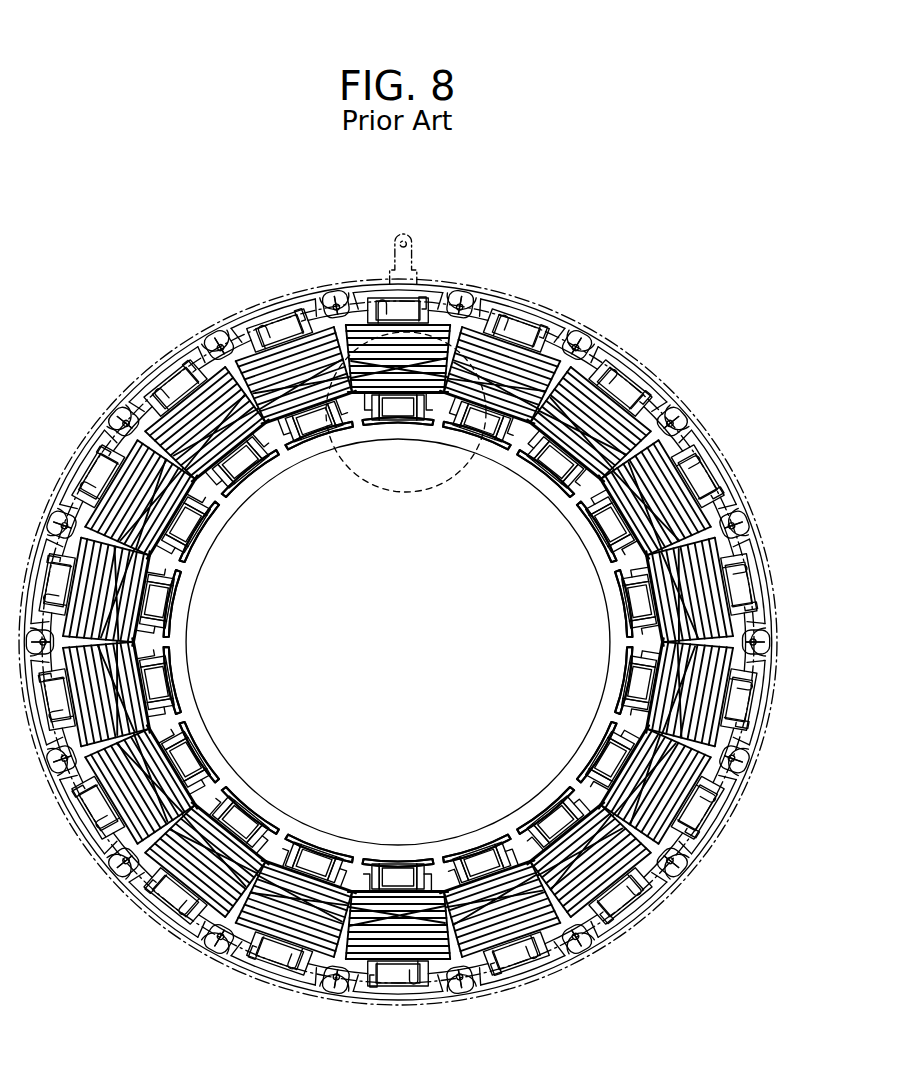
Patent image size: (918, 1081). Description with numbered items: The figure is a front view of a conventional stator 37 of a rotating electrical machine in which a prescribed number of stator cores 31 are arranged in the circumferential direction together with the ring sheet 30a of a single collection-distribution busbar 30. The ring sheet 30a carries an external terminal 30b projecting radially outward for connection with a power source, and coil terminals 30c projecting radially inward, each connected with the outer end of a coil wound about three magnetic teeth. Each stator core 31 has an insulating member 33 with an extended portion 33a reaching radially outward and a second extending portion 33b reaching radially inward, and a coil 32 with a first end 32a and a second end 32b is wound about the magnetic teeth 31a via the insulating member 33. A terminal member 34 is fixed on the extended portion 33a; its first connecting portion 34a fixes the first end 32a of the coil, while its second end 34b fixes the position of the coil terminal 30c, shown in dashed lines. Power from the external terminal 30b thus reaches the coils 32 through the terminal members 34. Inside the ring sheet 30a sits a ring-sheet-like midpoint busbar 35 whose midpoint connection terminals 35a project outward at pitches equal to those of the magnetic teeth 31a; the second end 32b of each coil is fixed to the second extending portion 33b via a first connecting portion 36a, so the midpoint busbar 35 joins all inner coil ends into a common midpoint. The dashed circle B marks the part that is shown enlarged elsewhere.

The stator 37 is at (614, 266).
The collection-distribution busbar 30 is at (440, 262).
The ring sheet 30a is at (515, 297).
The external terminal 30b is at (403, 232).
The coil terminal 30c is at (118, 424).
The stator core 31 is at (352, 292).
The magnetic teeth 31a is at (380, 424).
The coil 32 is at (352, 432).
The first end of the coil 32a is at (205, 338).
The second end of the coil 32b is at (440, 428).
The insulating member 33 is at (390, 305).
The extended portion 33a is at (442, 310).
The second extending portion 33b is at (446, 446).
The terminal member 34 is at (298, 320).
The first connecting portion 34a is at (258, 328).
The second end of the terminal member 34b is at (326, 300).
The midpoint busbar 35 is at (640, 622).
The midpoint connection terminal 35a is at (332, 428).
The first connecting portion of the terminal member 36a is at (200, 535).
The detail region B is at (413, 423).